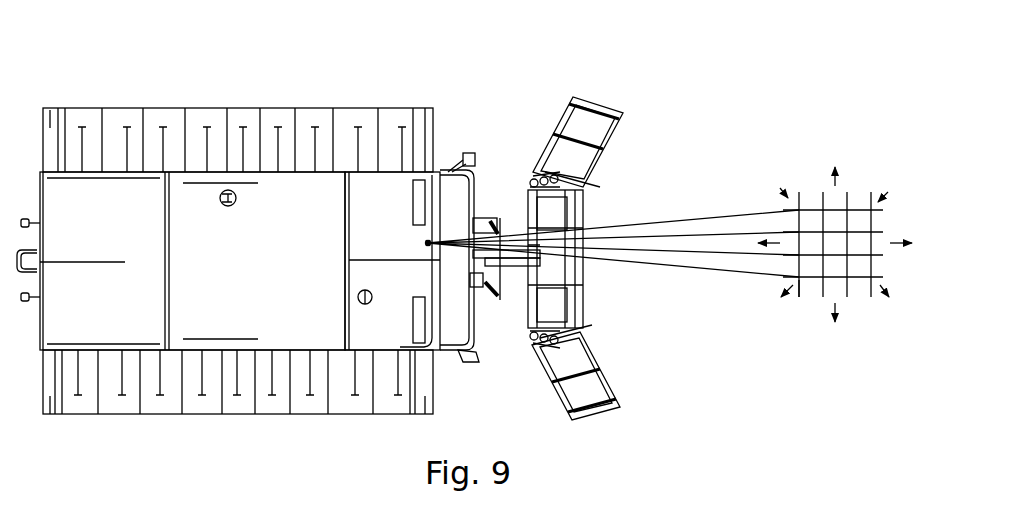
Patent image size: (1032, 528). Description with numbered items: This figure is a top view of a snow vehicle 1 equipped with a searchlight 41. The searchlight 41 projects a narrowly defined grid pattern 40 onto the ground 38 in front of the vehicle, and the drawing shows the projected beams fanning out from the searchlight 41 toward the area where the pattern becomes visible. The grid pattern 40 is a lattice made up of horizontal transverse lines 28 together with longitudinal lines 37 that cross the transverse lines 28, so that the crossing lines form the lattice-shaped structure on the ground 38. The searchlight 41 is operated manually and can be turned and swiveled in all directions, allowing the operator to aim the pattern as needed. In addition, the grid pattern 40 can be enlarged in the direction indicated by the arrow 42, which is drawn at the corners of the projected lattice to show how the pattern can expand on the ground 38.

The snow vehicle 1 is at (324, 91).
The searchlight 41 is at (432, 241).
The ground 38 is at (613, 205).
The longitudinal lines 37 is at (853, 209).
The arrow 42 is at (797, 202).
The horizontal transverse lines 28 is at (873, 218).
The grid pattern 40 is at (804, 300).